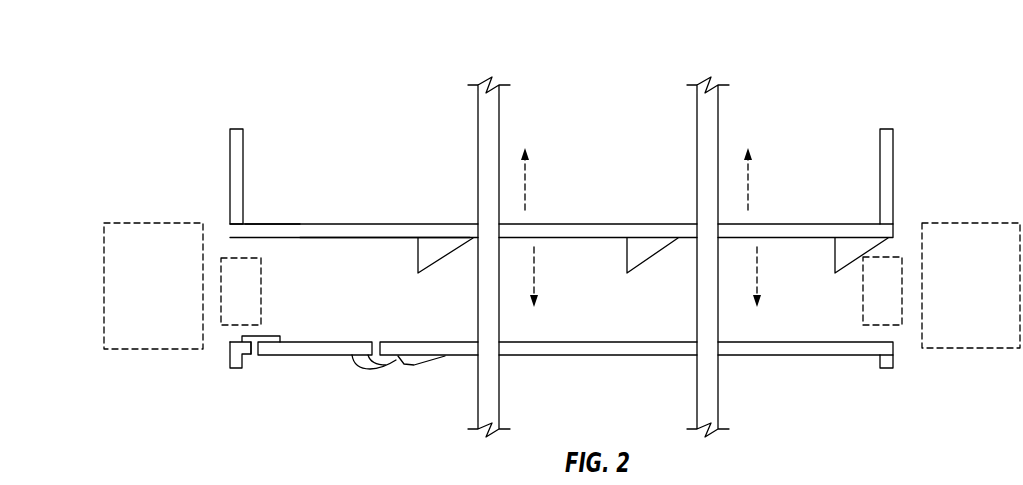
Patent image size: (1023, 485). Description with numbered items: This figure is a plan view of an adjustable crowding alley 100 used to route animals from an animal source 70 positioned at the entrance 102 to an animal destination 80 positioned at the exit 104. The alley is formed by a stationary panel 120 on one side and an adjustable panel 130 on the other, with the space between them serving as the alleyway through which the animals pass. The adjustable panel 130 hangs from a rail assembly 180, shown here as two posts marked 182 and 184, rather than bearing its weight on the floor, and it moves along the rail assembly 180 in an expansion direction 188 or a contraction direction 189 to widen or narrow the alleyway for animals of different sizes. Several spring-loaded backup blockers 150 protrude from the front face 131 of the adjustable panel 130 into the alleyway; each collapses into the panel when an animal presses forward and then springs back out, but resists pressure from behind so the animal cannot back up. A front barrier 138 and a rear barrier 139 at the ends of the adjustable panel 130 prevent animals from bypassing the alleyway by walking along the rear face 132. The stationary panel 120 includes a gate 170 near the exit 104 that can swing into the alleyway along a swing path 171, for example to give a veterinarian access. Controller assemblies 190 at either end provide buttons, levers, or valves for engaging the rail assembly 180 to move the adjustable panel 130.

The adjustable crowding alley 100 is at (934, 116).
The stationary panel 120 is at (780, 356).
The adjustable panel 130 is at (325, 232).
The front face 131 is at (378, 237).
The rear face 132 is at (259, 224).
The front barrier 138 is at (890, 178).
The rear barrier 139 is at (235, 187).
The backup blocker 150 is at (436, 242).
The gate 170 is at (290, 353).
The swing path 171 is at (357, 288).
The rail assembly 180 is at (490, 110).
The second post 182 is at (697, 140).
The first post 184 is at (479, 140).
The expansion direction 188 is at (525, 190).
The contraction direction 189 is at (534, 265).
The controller assembly 190 is at (235, 365).
The animal destination 80 is at (163, 299).
The animal source 70 is at (980, 299).
The exit 104 is at (256, 304).
The entrance 102 is at (897, 304).